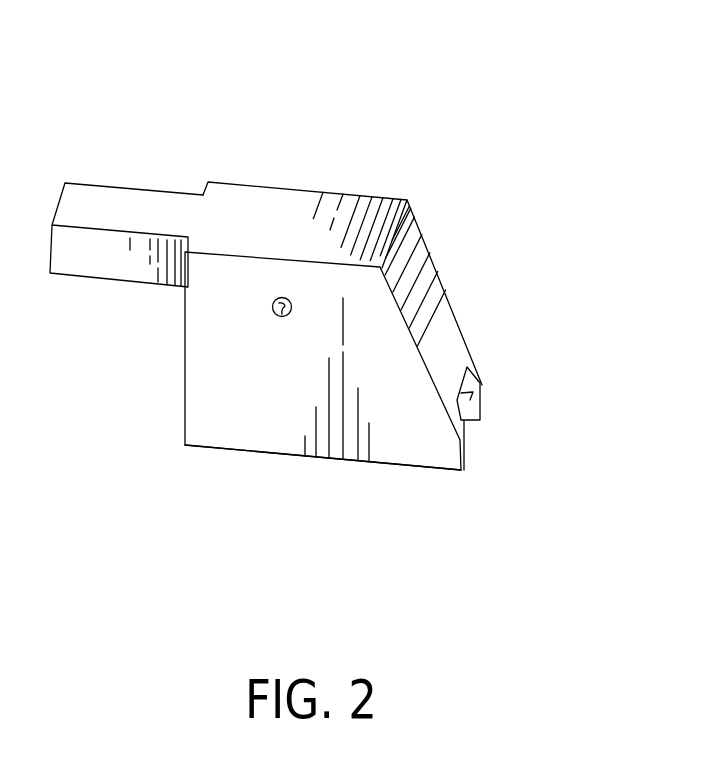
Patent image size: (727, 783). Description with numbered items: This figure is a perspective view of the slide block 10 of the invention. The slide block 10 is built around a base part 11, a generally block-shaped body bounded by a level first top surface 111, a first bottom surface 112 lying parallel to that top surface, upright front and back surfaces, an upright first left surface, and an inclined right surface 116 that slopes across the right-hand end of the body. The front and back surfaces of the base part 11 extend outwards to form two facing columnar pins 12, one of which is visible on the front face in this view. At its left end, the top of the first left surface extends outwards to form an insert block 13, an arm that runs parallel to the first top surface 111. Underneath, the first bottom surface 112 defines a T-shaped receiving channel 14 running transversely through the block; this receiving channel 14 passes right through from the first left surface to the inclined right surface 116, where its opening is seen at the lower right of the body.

The slide block 10 is at (505, 136).
The base part 11 is at (197, 427).
The columnar pin 12 is at (275, 312).
The insert block 13 is at (113, 202).
The receiving channel 14 is at (482, 380).
The first top surface 111 is at (309, 206).
The first bottom surface 112 is at (403, 468).
The inclined right surface 116 is at (445, 293).